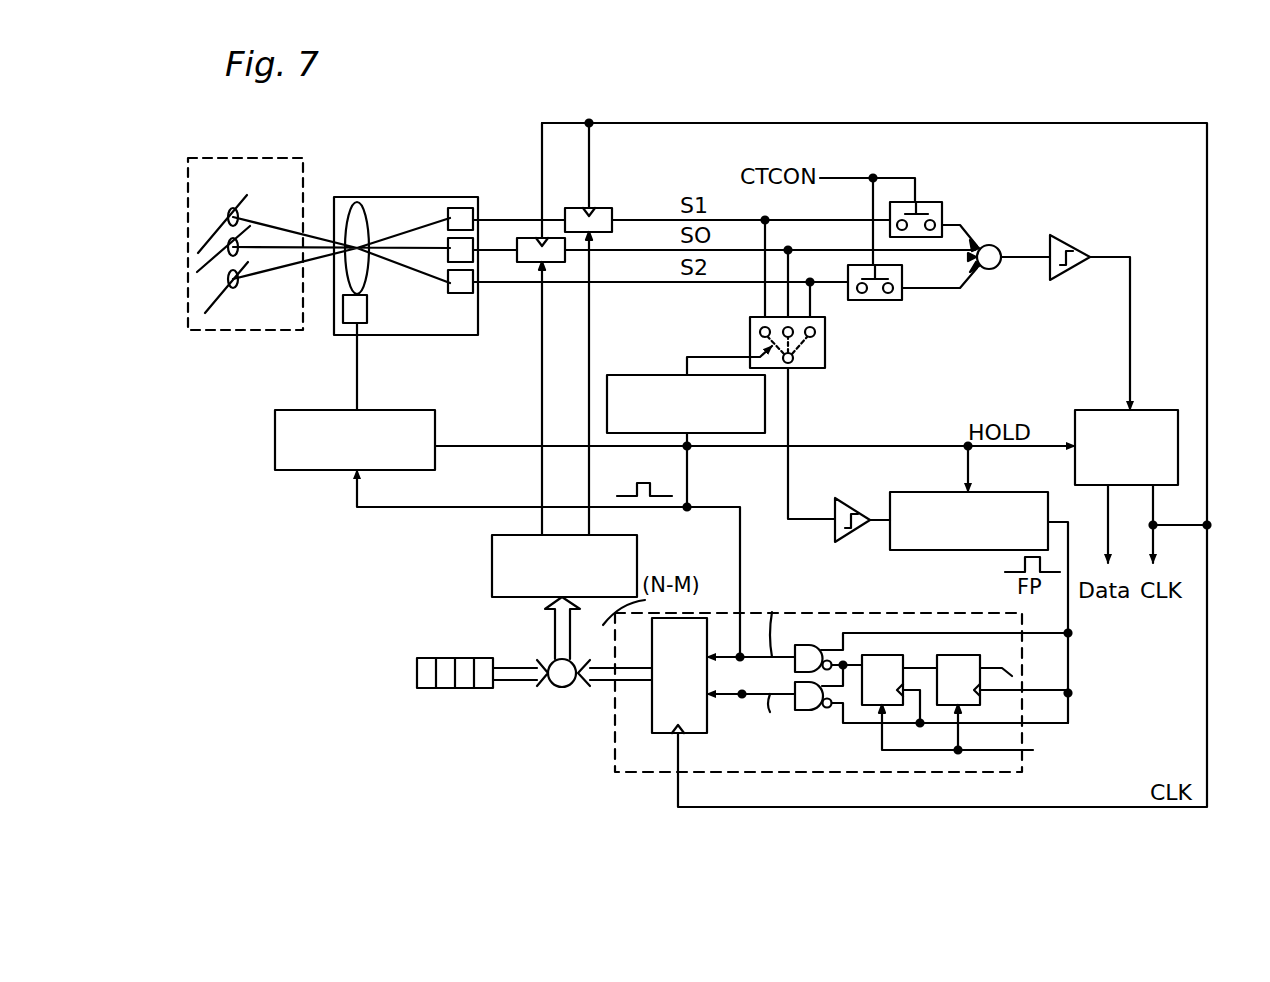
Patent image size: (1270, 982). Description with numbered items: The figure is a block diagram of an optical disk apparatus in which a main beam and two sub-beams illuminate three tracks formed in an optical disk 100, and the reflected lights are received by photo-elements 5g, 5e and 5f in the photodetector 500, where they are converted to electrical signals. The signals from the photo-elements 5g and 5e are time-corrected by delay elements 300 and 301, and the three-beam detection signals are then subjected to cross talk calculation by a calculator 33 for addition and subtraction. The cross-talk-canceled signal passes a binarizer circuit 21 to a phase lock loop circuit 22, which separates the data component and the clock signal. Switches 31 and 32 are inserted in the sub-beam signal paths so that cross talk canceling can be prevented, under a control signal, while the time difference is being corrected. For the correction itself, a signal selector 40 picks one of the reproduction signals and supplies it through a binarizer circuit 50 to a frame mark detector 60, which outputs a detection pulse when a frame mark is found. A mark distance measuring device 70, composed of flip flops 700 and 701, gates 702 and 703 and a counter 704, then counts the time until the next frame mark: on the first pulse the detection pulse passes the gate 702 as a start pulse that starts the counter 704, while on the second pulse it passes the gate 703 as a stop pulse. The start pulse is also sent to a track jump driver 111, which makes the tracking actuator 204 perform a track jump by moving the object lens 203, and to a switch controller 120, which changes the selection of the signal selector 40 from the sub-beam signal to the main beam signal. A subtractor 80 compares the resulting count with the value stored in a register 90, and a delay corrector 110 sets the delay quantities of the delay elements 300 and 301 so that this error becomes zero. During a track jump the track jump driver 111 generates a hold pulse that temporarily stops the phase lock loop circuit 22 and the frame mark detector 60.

The optical disk 100 is at (230, 330).
The photodetector 500 is at (419, 197).
The object lens 203 is at (381, 194).
The tracking actuator 204 is at (365, 310).
The photo-element 5e is at (474, 187).
The photo-element 5g is at (472, 249).
The photo-element 5f is at (471, 292).
The delay element 300 is at (527, 238).
The delay element 301 is at (598, 207).
The switch 31 is at (942, 212).
The switch 32 is at (898, 292).
The calculator for addition and subtraction 33 is at (998, 270).
The binarizer circuit 21 is at (1054, 237).
The phase lock loop (PLL) circuit 22 is at (1100, 410).
The signal selector 40 is at (827, 346).
The switch controller 120 is at (654, 375).
The track jump driver 111 is at (326, 472).
The delay corrector 110 is at (490, 553).
The binarizer circuit 50 is at (846, 500).
The frame mark detector 60 is at (1022, 485).
The mark distance measuring device 70 is at (940, 613).
The subtractor 80 is at (563, 688).
The register 90 is at (419, 657).
The counter 704 is at (652, 722).
The gate 702 is at (814, 645).
The gate 703 is at (811, 712).
The flip flop 701 is at (887, 655).
The flip flop 700 is at (966, 655).